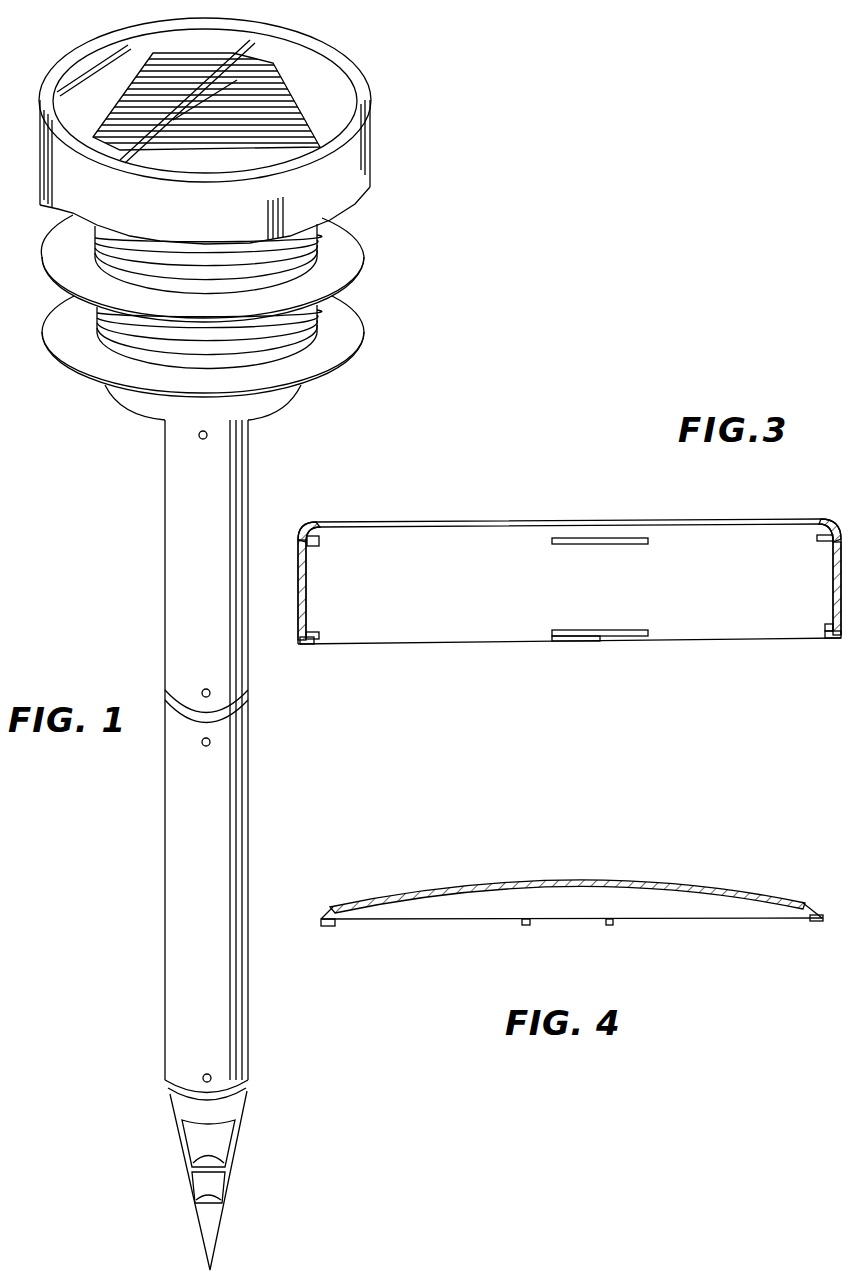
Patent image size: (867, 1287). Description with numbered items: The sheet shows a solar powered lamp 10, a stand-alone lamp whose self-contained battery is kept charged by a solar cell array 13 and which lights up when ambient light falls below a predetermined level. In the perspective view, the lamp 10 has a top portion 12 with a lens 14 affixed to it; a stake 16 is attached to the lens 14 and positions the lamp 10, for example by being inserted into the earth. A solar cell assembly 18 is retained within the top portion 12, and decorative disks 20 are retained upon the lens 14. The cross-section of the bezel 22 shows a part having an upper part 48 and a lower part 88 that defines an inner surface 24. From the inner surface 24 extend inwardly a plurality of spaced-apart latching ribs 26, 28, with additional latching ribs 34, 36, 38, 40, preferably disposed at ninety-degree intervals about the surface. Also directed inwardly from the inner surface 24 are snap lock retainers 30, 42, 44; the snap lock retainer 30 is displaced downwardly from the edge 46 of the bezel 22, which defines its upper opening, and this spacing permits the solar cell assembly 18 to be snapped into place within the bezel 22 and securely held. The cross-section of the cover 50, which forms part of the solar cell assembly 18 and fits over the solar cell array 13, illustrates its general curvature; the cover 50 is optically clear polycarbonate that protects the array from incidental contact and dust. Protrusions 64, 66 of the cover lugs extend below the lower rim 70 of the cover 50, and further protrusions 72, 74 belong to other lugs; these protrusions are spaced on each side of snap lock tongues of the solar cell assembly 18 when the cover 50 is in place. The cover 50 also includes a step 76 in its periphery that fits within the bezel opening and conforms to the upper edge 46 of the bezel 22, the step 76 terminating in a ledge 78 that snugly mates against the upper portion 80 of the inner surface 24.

In FIG. 1, the solar powered lamp 10 is at (255, 644).
In FIG. 1, the top portion 12 is at (362, 195).
In FIG. 1, the solar cell array 13 is at (150, 62).
In FIG. 1, the lens 14 is at (313, 242).
In FIG. 1, the stake 16 is at (163, 468).
In FIG. 1, the solar cell assembly 18 is at (293, 78).
In FIG. 1, the decorative disks 20 is at (357, 282).
In FIG. 3, the bezel 22 is at (843, 613).
In FIG. 3, the inner surface 24 is at (572, 591).
In FIG. 3, the latching rib 26 is at (648, 638).
In FIG. 3, the latching rib 28 is at (602, 642).
In FIG. 3, the snap lock retainer 30 is at (588, 542).
In FIG. 3, the latching rib 34 is at (825, 627).
In FIG. 3, the latching rib 36 is at (823, 638).
In FIG. 3, the latching rib 38 is at (315, 635).
In FIG. 3, the latching rib 40 is at (315, 643).
In FIG. 3, the snap lock retainer 42 is at (317, 547).
In FIG. 3, the snap lock retainer 44 is at (817, 539).
In FIG. 3, the edge 46 is at (447, 526).
In FIG. 3, the upper part 48 is at (840, 532).
In FIG. 4, the cover 50 is at (565, 914).
In FIG. 4, the protrusion 64 is at (525, 922).
In FIG. 4, the protrusion 66 is at (610, 923).
In FIG. 4, the lower rim 70 is at (688, 920).
In FIG. 4, the protrusion 72 is at (817, 922).
In FIG. 4, the protrusion 74 is at (320, 924).
In FIG. 4, the step 76 is at (810, 910).
In FIG. 4, the ledge 78 is at (323, 918).
In FIG. 3, the upper portion 80 is at (332, 538).
In FIG. 3, the lower part 88 is at (836, 615).